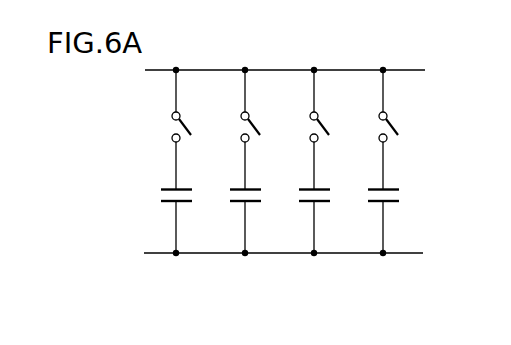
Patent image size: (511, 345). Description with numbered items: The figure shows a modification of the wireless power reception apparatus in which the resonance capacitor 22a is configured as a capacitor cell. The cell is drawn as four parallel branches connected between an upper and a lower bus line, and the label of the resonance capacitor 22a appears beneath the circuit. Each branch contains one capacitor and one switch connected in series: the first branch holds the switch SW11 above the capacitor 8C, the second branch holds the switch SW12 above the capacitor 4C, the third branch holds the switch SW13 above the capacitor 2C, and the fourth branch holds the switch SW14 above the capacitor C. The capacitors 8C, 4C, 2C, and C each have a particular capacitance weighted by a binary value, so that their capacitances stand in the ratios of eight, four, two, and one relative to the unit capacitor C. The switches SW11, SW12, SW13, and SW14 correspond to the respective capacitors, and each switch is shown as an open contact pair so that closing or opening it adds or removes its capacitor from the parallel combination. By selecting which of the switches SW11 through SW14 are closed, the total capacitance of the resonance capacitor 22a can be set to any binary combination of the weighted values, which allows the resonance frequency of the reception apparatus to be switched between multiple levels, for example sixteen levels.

The resonance capacitor 22a is at (307, 316).
The switch SW11 is at (193, 121).
The switch SW12 is at (262, 121).
The switch SW13 is at (331, 121).
The switch SW14 is at (400, 121).
The capacitor 8C is at (195, 194).
The capacitor 4C is at (264, 194).
The capacitor 2C is at (333, 194).
The capacitor C is at (402, 194).